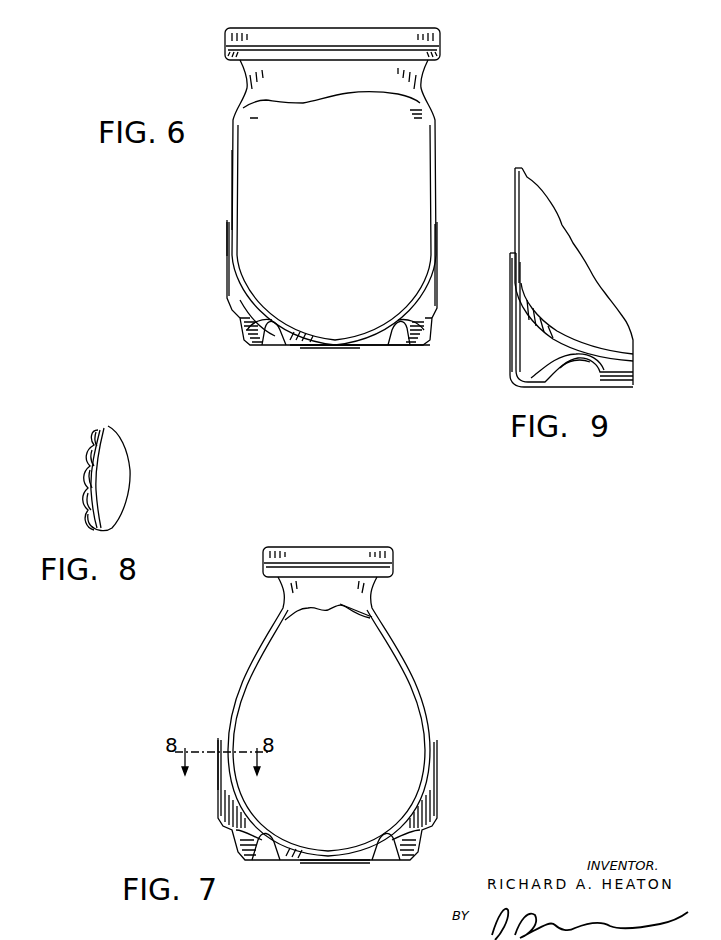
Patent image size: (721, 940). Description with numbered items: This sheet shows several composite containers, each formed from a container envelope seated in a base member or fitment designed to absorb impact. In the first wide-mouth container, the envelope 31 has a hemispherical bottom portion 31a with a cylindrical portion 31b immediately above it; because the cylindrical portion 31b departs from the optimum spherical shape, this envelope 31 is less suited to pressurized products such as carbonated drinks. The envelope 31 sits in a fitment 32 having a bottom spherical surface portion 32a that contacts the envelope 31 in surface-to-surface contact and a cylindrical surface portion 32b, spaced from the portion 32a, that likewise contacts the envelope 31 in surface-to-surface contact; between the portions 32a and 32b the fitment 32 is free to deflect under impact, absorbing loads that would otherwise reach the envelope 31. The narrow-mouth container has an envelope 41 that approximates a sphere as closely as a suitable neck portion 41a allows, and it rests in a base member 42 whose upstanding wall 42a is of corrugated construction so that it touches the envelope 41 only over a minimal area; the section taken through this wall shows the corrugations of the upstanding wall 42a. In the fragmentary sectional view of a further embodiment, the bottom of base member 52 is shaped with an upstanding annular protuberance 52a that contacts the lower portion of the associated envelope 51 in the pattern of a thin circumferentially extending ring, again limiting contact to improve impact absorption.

In FIG. 6, the envelope 31 is at (444, 136).
In FIG. 6, the hemispherical bottom portion 31a is at (236, 318).
In FIG. 6, the cylindrical portion 31b is at (232, 178).
In FIG. 6, the fitment 32 is at (448, 286).
In FIG. 6, the bottom spherical surface portion 32a is at (360, 350).
In FIG. 6, the cylindrical surface portion 32b is at (227, 255).
In FIG. 7, the envelope 41 is at (430, 713).
In FIG. 7, the neck portion 41a is at (372, 616).
In FIG. 7, the base member 42 is at (448, 809).
In FIG. 8, the upstanding wall 42a is at (88, 462).
In FIG. 7, the upstanding wall 42a is at (218, 742).
In FIG. 9, the envelope 51 is at (515, 209).
In FIG. 9, the base member 52 is at (514, 366).
In FIG. 9, the upstanding annular protuberance 52a is at (585, 365).